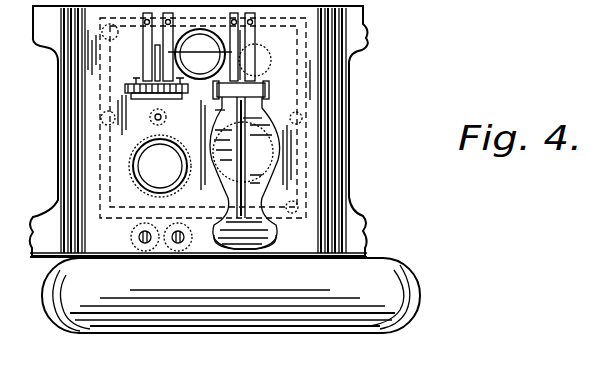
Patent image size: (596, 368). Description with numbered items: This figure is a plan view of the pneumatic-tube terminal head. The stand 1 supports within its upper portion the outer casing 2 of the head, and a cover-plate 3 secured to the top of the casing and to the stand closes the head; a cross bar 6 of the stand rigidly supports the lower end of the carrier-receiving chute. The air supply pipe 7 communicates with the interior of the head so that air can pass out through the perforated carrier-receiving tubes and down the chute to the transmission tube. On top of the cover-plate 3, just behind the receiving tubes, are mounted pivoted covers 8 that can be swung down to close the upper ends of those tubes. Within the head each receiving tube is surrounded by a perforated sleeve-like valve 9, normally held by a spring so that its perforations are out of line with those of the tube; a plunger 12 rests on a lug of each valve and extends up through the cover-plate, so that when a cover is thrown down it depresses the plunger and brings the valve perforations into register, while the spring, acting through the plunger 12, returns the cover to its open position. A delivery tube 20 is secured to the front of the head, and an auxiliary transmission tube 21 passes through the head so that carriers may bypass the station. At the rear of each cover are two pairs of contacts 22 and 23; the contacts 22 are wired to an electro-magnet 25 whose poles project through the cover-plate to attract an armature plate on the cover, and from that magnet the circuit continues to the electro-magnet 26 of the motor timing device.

The stand 1 is at (32, 238).
The outer casing 2 is at (307, 165).
The cover-plate 3 is at (90, 127).
The cross bar 6 is at (126, 91).
The air supply pipe 7 is at (201, 118).
The pivoted covers 8 is at (246, 165).
The sleeve-like valve 9 is at (157, 150).
The plunger 12 is at (220, 119).
The delivery tube 20 is at (280, 334).
The auxiliary transmission tube 21 is at (207, 24).
The pair of contacts 22 is at (146, 48).
The pair of contacts 23 is at (200, 54).
The electro-magnet 25 is at (146, 252).
The electro-magnet of the motor timing device 26 is at (213, 254).